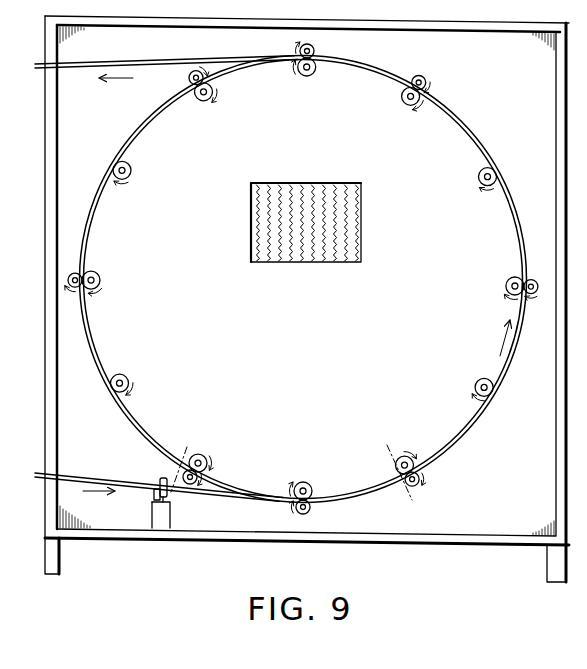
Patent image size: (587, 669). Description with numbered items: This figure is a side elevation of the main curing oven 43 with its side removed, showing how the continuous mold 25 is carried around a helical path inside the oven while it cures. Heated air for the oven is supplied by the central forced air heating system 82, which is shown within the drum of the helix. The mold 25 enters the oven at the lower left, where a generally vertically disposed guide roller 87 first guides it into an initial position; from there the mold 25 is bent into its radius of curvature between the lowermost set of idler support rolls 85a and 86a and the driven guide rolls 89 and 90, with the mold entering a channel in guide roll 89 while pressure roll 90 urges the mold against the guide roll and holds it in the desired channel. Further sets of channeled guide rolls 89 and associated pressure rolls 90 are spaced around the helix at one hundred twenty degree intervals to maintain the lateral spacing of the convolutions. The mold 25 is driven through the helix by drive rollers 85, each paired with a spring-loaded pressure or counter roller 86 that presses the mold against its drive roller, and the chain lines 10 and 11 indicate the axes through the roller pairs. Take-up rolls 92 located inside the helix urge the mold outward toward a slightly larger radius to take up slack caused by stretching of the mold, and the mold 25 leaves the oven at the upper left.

The radial axis of roller pair 10 is at (396, 450).
The radial axis of roller pair 11 is at (195, 452).
The mold 25 is at (136, 133).
The main oven 43 is at (509, 102).
The central forced air heating system 82 is at (328, 183).
The drive rollers 85 is at (204, 101).
The idler support roll 85a is at (307, 76).
The pressure or counter roller 86 is at (189, 78).
The idler support roll 86a is at (315, 50).
The guide roller 87 is at (153, 494).
The guide roll 89 is at (405, 104).
The pressure roll 90 is at (419, 75).
The take-up rolls 92 is at (131, 171).